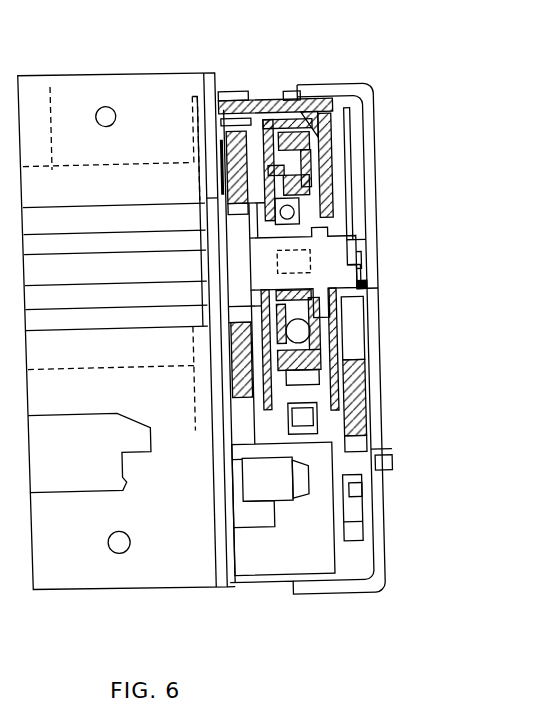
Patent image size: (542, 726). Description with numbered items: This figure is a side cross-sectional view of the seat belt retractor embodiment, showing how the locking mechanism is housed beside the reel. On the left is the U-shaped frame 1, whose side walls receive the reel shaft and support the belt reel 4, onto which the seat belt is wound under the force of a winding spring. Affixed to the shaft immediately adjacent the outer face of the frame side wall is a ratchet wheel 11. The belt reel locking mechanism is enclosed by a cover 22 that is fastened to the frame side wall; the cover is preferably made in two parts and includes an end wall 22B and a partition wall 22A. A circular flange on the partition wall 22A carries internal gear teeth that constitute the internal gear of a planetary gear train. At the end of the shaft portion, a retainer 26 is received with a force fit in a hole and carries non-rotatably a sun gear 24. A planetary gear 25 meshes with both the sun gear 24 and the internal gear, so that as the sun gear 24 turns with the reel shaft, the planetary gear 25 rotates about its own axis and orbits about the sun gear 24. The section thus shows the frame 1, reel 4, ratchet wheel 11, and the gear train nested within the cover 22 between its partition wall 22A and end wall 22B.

The U-shaped frame 1 is at (125, 71).
The belt reel 4 is at (60, 73).
The ratchet wheel 11 is at (237, 150).
The cover 22 is at (383, 140).
The partition wall 22A is at (309, 102).
The end wall 22B is at (375, 201).
The sun gear 24 is at (344, 230).
The planetary gear 25 is at (357, 356).
The retainer 26 is at (366, 294).